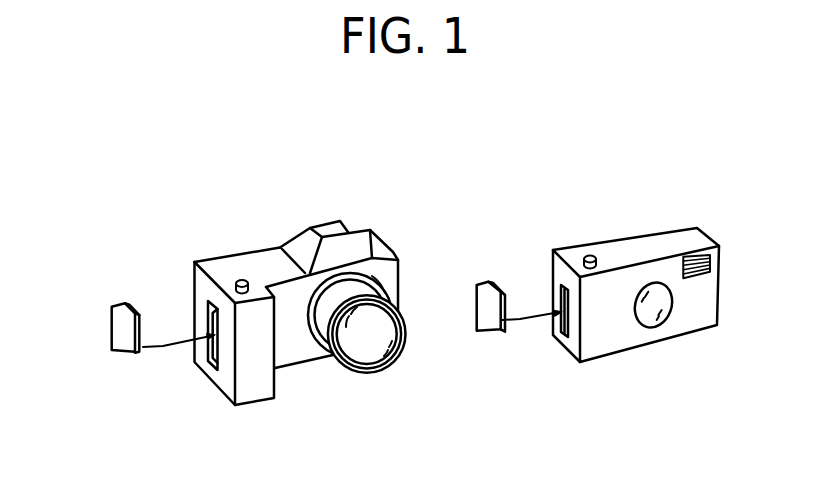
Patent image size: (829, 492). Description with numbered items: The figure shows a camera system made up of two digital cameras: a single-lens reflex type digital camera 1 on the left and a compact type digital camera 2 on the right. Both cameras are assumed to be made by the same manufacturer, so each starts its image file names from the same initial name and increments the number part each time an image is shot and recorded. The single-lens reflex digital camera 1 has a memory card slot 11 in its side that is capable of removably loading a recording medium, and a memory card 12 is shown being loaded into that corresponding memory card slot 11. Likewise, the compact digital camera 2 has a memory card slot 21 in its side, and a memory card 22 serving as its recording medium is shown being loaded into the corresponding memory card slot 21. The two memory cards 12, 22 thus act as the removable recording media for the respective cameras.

The single-lens reflex type digital camera 1 is at (327, 195).
The memory card slot 11 is at (207, 367).
The memory card 12 is at (118, 353).
The compact type digital camera 2 is at (636, 213).
The memory card slot 21 is at (560, 338).
The memory card 22 is at (485, 333).